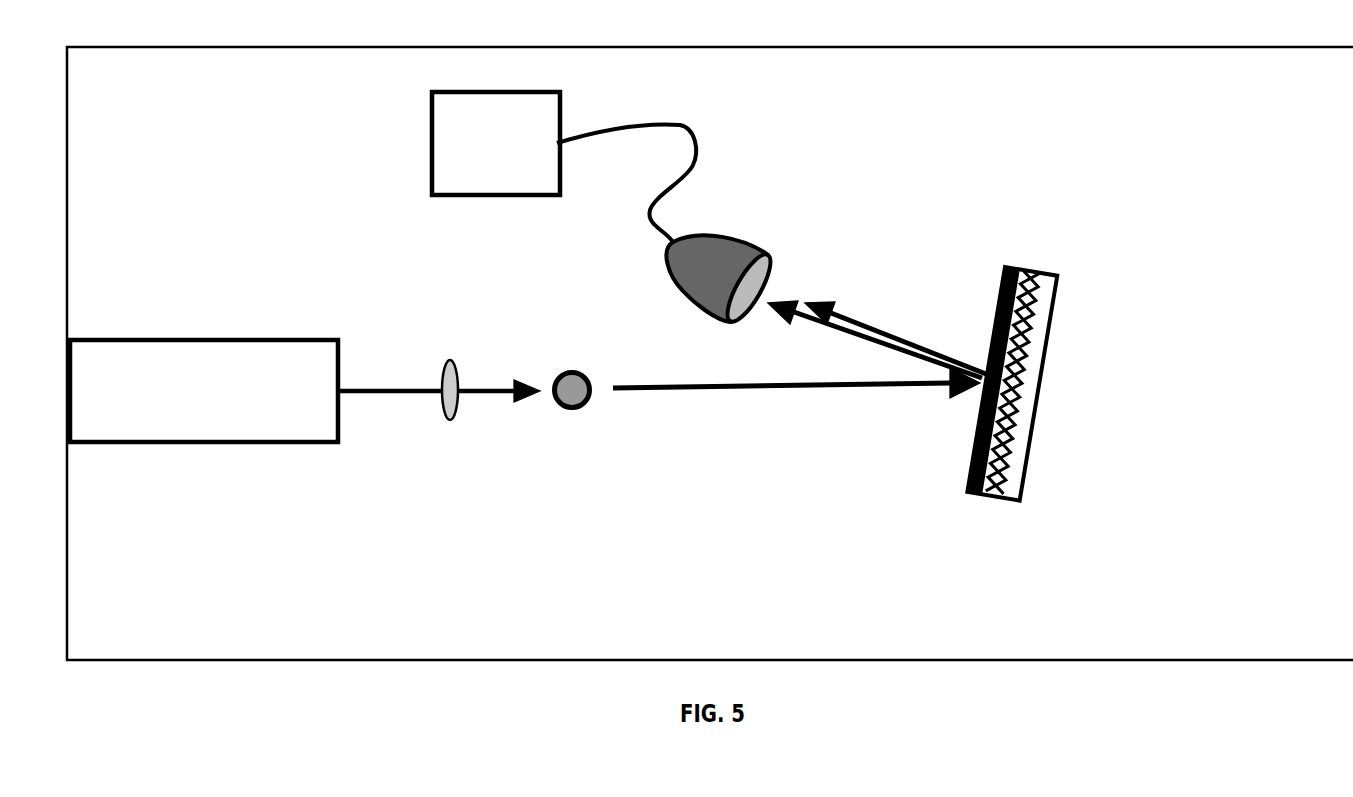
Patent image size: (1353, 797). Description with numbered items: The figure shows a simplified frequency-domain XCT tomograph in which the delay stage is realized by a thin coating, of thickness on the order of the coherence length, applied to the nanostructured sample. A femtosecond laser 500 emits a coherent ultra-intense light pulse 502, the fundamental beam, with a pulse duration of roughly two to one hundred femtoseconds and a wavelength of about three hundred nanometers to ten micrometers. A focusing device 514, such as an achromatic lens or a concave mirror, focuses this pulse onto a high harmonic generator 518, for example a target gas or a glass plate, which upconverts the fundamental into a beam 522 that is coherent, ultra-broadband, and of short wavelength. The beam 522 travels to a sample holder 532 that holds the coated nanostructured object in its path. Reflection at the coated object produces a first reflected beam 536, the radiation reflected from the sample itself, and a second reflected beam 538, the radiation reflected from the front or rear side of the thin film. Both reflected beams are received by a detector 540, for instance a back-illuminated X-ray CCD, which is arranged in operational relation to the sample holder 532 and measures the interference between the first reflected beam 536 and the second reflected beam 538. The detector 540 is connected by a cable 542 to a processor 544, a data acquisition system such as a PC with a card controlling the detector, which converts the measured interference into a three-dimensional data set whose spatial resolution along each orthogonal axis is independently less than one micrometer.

The femtosecond laser 500 is at (206, 467).
The coherent ultra-intense light pulse 502 is at (415, 416).
The focusing device 514 is at (457, 435).
The high harmonic generator 518 is at (549, 366).
The beam 522 is at (773, 412).
The sample holder 532 is at (988, 523).
The first reflected beam 536 is at (787, 289).
The second reflected beam 538 is at (822, 290).
The detector 540 is at (744, 217).
The cable 542 is at (708, 117).
The processor 544 is at (408, 152).